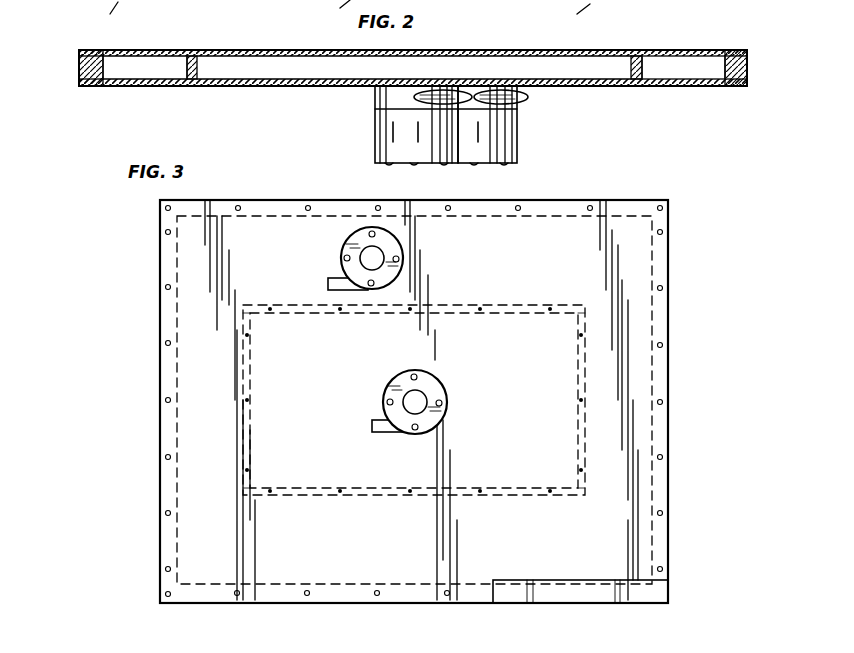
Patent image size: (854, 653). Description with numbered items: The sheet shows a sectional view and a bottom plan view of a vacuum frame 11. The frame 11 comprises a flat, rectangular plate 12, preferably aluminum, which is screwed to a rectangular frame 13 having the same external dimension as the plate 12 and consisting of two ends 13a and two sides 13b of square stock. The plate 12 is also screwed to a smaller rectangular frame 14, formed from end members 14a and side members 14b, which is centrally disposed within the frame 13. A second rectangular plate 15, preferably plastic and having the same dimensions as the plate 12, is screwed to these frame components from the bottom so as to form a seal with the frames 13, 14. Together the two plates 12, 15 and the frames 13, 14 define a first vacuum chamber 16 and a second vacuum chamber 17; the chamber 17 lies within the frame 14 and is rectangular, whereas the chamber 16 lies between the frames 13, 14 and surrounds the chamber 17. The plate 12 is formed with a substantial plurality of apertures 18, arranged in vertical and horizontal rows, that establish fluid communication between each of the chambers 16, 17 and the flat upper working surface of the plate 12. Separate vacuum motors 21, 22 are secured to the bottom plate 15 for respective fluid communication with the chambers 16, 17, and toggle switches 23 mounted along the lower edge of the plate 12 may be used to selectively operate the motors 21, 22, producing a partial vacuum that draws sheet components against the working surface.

In FIG. 2, the vacuum frame 11 is at (690, 44).
In FIG. 3, the vacuum frame 11 is at (688, 245).
In FIG. 2, the flat rectangular plate 12 is at (740, 50).
In FIG. 2, the rectangular frame 13 is at (76, 62).
In FIG. 3, the rectangular frame 13 is at (160, 255).
In FIG. 2, the ends 13a is at (78, 70).
In FIG. 3, the ends 13a is at (168, 306).
In FIG. 2, the sides 13b is at (562, 14).
In FIG. 3, the sides 13b is at (333, 212).
In FIG. 2, the smaller rectangular frame 14 is at (200, 66).
In FIG. 3, the smaller rectangular frame 14 is at (297, 303).
In FIG. 2, the end members 14a is at (185, 72).
In FIG. 3, the end members 14a is at (244, 358).
In FIG. 3, the side members 14b is at (510, 305).
In FIG. 2, the second rectangular plate 15 is at (262, 86).
In FIG. 3, the second rectangular plate 15 is at (628, 392).
In FIG. 2, the first vacuum chamber 16 is at (135, 66).
In FIG. 3, the first vacuum chamber 16 is at (210, 408).
In FIG. 2, the second vacuum chamber 17 is at (325, 66).
In FIG. 3, the second vacuum chamber 17 is at (312, 420).
In FIG. 2, the apertures 18 is at (172, 50).
In FIG. 2, the vacuum motor 21 is at (380, 131).
In FIG. 3, the vacuum motor 21 is at (393, 258).
In FIG. 2, the vacuum motor 22 is at (506, 135).
In FIG. 3, the vacuum motor 22 is at (440, 395).
In FIG. 2, the toggle switches 23 is at (216, 13).